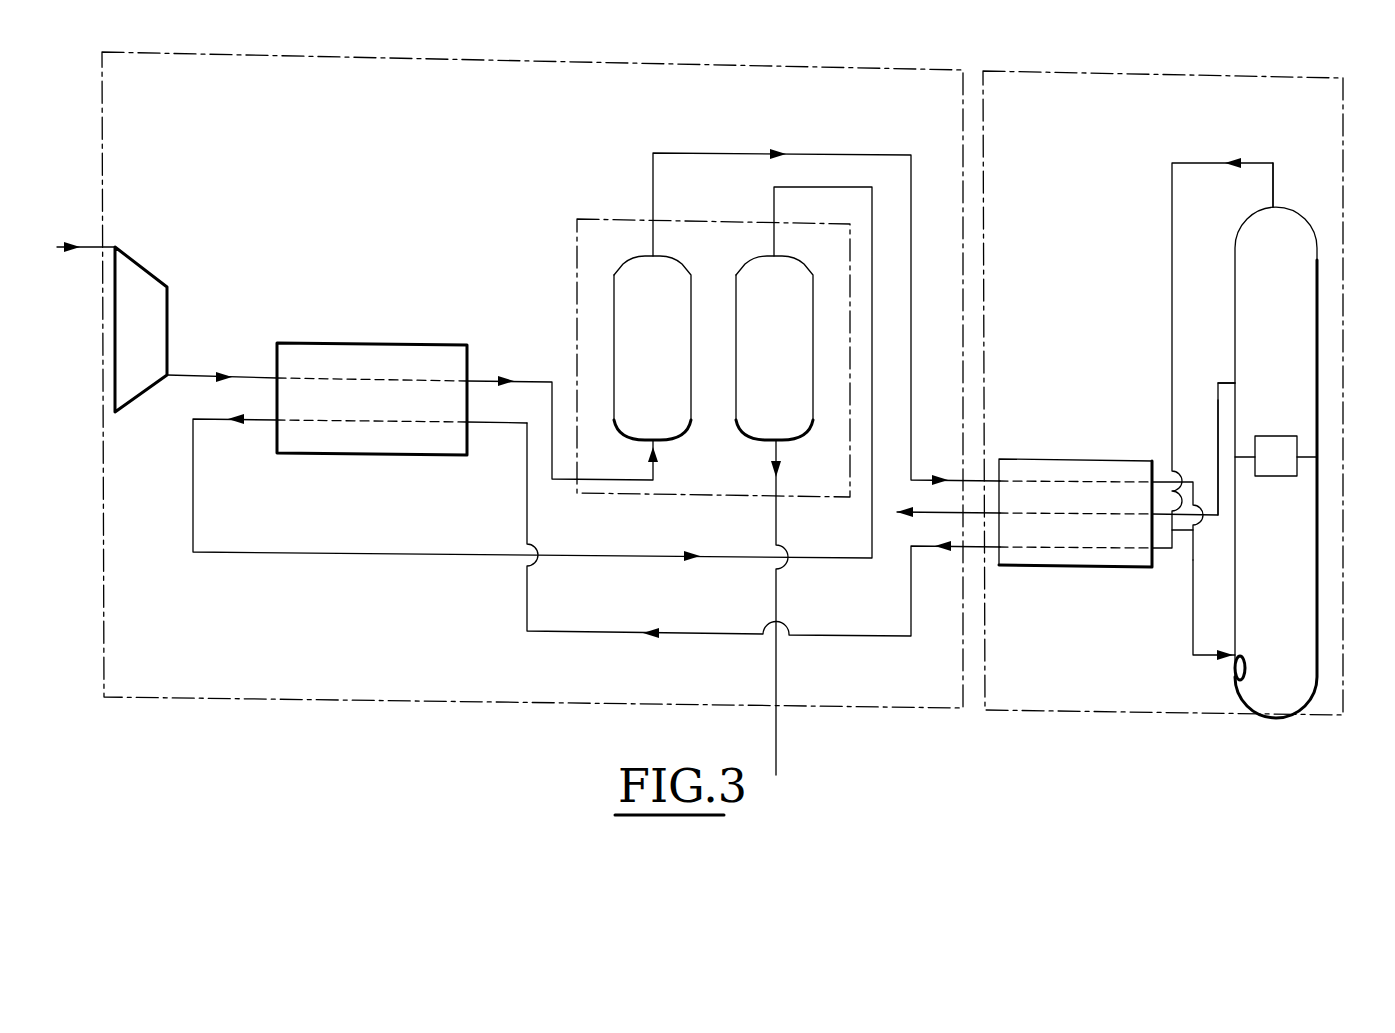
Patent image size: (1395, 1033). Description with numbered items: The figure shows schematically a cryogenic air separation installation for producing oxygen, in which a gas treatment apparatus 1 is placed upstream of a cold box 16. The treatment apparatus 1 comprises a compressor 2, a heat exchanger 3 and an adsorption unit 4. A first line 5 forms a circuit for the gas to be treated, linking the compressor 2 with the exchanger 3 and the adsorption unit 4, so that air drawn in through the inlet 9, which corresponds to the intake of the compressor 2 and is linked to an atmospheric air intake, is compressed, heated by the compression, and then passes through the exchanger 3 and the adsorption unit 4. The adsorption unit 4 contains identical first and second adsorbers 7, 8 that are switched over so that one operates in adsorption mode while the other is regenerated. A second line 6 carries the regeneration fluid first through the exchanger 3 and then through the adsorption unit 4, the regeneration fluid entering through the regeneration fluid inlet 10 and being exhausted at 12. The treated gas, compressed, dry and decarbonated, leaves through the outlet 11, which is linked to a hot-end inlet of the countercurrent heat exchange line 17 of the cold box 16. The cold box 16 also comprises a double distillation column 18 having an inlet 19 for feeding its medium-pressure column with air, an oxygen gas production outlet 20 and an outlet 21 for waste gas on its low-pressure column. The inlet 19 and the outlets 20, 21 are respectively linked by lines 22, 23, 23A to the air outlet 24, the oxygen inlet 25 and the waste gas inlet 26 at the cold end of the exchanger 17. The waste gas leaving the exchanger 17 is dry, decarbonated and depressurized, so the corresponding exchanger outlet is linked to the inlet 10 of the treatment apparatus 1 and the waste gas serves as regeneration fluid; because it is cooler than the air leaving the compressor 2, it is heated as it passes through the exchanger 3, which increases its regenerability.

The treatment apparatus 1 is at (340, 722).
The compressor 2 is at (150, 270).
The heat exchanger 3 is at (338, 343).
The adsorption unit 4 is at (577, 306).
The first line 5 is at (190, 375).
The second line 6 is at (330, 552).
The first adsorber 7 is at (665, 444).
The second adsorber 8 is at (788, 444).
The inlet for the gas to be treated 9 is at (96, 244).
The regeneration fluid inlet 10 is at (960, 552).
The outlet for the treated gas 11 is at (958, 476).
The regenerating gas exhaust 12 is at (776, 742).
The cold box 16 is at (1136, 722).
The countercurrent heat exchange line 17 is at (1027, 458).
The double distillation column 18 is at (1318, 330).
The inlet 19 is at (1236, 681).
The oxygen gas production outlet 20 is at (1240, 383).
The waste gas outlet 21 is at (1265, 212).
The line 22 is at (1192, 634).
The line 23 is at (1217, 423).
The line 23A is at (1170, 270).
The air outlet 24 is at (1162, 470).
The oxygen inlet 25 is at (1152, 516).
The waste gas inlet 26 is at (1153, 568).